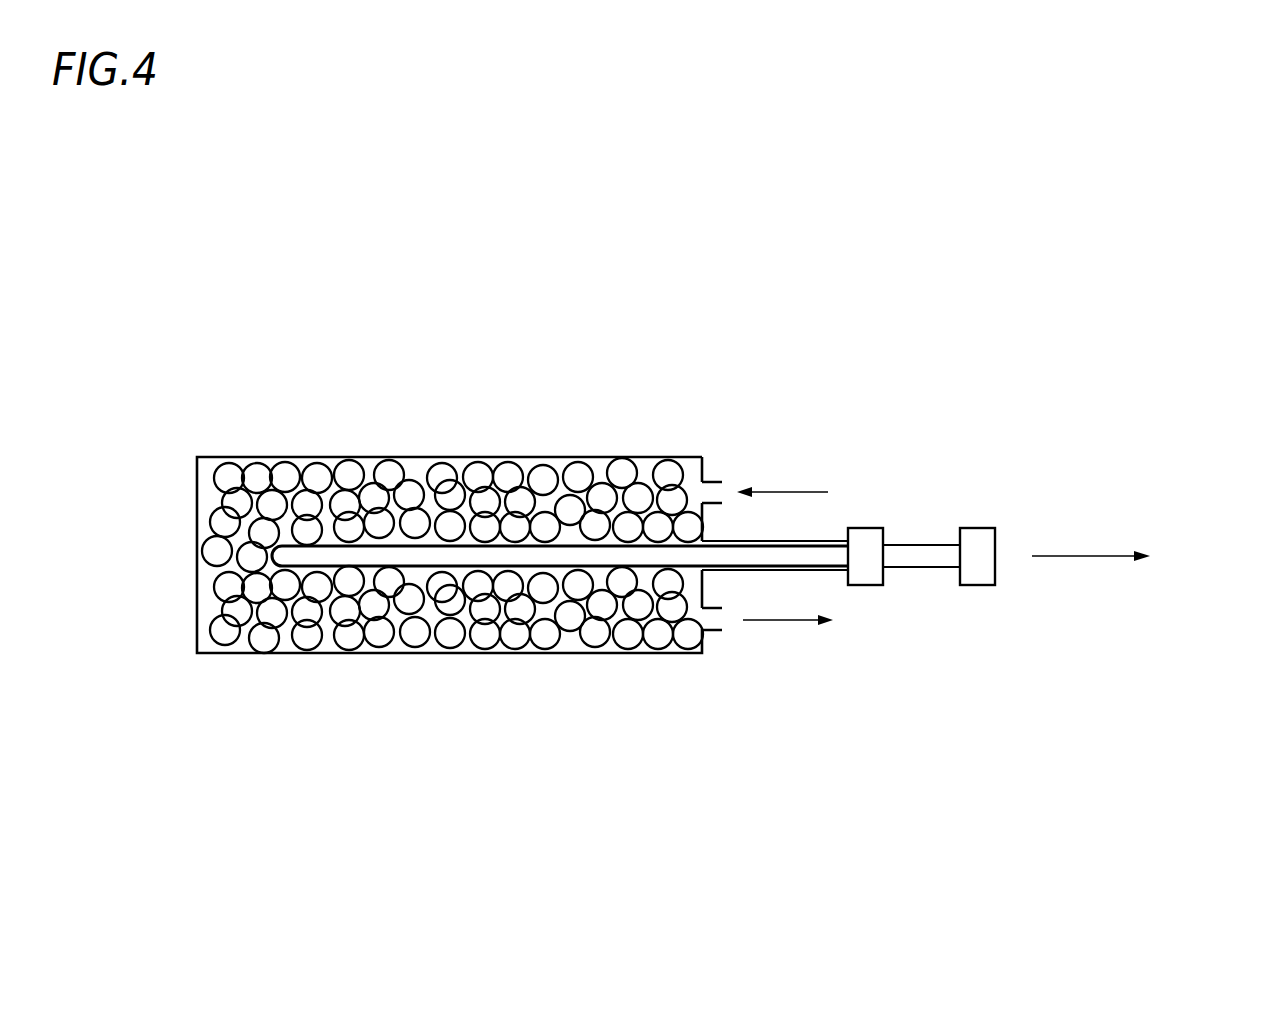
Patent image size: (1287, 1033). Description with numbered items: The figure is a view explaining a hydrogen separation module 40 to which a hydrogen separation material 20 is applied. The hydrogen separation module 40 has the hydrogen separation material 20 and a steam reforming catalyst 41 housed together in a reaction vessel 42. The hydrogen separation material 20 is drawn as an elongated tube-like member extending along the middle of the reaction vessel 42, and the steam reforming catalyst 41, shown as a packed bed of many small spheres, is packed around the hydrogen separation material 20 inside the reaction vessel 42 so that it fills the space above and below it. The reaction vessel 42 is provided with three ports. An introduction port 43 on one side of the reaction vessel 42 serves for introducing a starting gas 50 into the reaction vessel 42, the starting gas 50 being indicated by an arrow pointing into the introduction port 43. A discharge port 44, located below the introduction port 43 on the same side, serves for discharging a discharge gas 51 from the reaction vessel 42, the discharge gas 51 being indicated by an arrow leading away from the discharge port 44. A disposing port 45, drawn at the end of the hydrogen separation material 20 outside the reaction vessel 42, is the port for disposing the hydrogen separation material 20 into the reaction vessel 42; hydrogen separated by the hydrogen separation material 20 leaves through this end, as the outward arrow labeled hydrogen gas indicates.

The hydrogen separation material 20 is at (280, 536).
The hydrogen separation module 40 is at (687, 587).
The steam reforming catalyst 41 is at (313, 476).
The reaction vessel 42 is at (197, 588).
The introduction port 43 is at (715, 493).
The discharge port 44 is at (715, 618).
The disposing port 45 is at (885, 540).
The starting gas 50 is at (808, 497).
The discharge gas 51 is at (811, 625).